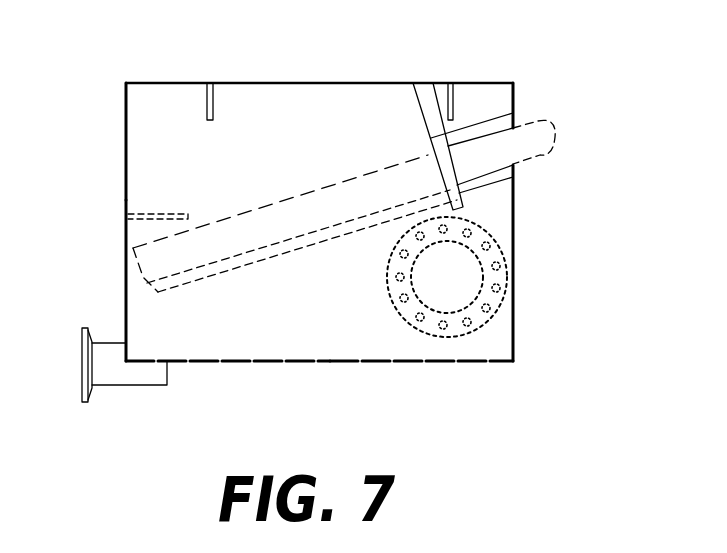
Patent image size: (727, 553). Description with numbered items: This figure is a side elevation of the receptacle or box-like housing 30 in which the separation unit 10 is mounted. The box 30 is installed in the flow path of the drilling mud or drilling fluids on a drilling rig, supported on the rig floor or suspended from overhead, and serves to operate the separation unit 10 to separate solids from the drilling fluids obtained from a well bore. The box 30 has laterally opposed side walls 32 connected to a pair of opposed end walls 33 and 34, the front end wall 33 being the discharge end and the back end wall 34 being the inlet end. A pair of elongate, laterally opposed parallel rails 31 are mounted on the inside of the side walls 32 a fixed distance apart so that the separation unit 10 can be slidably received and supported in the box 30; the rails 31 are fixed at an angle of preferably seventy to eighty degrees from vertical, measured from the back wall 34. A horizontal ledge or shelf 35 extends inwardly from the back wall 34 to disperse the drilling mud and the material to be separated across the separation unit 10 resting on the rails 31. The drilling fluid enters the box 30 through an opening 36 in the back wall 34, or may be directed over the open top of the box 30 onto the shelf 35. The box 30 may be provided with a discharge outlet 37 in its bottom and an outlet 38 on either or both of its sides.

The separation unit 10 is at (552, 140).
The box-like housing 30 is at (277, 83).
The parallel rails 31 is at (255, 250).
The side walls 32 is at (313, 347).
The front end wall 33 is at (498, 240).
The back end wall 34 is at (123, 237).
The horizontal ledge or shelf 35 is at (153, 213).
The opening 36 is at (125, 130).
The discharge outlet 37 is at (403, 362).
The side outlet 38 is at (463, 285).